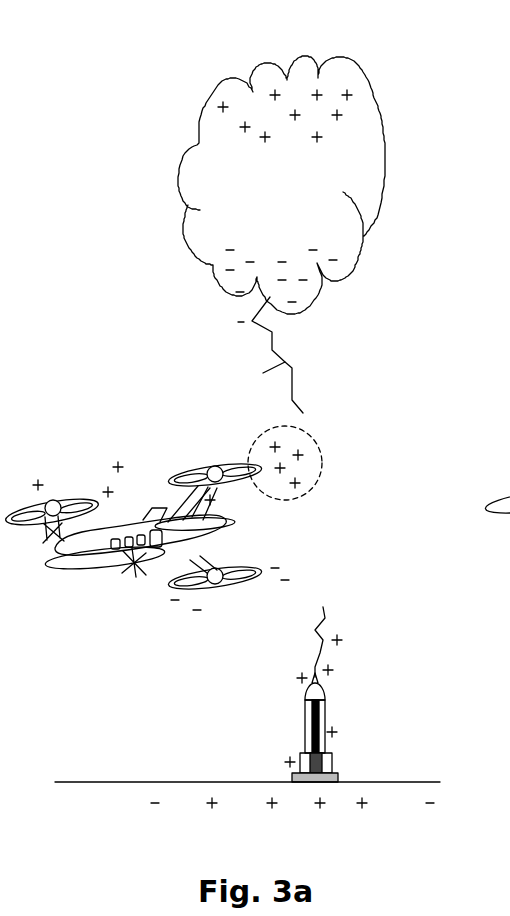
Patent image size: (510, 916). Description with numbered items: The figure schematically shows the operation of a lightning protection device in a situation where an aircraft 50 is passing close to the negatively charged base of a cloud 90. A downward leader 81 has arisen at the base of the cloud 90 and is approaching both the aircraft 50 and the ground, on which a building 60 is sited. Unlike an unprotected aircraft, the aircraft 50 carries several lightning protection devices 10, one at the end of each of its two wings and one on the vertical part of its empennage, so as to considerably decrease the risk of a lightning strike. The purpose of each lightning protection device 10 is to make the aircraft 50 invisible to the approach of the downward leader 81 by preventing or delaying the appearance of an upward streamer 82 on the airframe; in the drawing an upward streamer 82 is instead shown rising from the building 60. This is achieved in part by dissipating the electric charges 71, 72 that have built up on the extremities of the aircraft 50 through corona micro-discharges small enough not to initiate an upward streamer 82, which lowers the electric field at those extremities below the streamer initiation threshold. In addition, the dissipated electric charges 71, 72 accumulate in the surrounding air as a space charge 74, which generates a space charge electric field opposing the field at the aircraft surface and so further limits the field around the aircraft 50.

The cloud 90 is at (292, 162).
The electric charges 72 is at (326, 309).
The electric charges 71 is at (273, 451).
The downward leader 81 is at (326, 355).
The space charge 74 is at (321, 463).
The lightning protection device 10 is at (257, 534).
The aircraft 50 is at (139, 579).
The upward streamer 82 is at (373, 641).
The building 60 is at (362, 727).